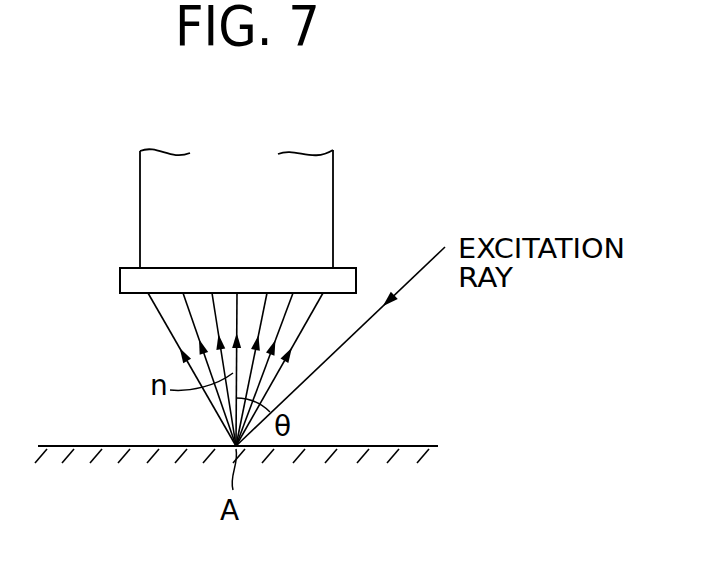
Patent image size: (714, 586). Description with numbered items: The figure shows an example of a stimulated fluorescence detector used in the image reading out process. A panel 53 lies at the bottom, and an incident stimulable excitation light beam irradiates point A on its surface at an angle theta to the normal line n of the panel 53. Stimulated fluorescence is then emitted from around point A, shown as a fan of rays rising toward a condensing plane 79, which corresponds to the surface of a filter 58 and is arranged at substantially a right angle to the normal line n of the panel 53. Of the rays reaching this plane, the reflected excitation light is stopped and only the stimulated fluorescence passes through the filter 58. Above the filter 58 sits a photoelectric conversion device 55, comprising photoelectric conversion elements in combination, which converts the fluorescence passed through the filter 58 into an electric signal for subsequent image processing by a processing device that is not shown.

The photoelectric conversion device 55 is at (312, 183).
The filter 58 is at (347, 268).
The condensing plane 79 is at (142, 294).
The panel 53 is at (404, 452).